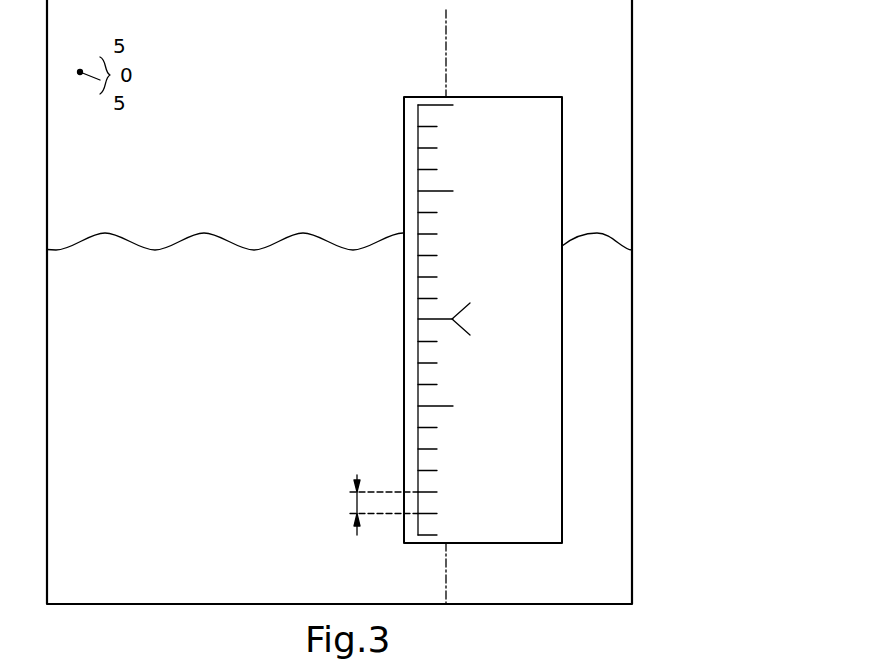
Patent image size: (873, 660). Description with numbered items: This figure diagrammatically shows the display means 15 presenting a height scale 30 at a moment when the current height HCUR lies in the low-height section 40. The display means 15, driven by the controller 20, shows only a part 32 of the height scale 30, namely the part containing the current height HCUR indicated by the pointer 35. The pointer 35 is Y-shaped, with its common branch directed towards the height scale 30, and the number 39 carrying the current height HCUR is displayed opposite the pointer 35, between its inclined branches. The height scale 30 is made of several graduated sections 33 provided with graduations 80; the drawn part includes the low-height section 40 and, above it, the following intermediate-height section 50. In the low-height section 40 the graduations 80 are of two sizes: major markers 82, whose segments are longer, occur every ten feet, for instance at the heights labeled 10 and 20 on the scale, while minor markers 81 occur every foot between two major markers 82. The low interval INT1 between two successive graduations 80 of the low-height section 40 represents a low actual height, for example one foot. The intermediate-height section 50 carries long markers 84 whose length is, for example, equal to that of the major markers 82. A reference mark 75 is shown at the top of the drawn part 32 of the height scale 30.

The display means 15 is at (632, 453).
The height scale 30 is at (586, 288).
The part of the height scale 32 is at (574, 104).
The graduated section 33 is at (619, 243).
The intermediate-height section 50 is at (542, 122).
The low-height section 40 is at (616, 345).
The pointer 35 is at (580, 317).
The number 39 is at (619, 337).
The current height HCUR is at (540, 334).
The graduations 80 is at (366, 281).
The minor markers 81 is at (423, 277).
The major markers 82 is at (366, 289).
The long markers 84 is at (366, 182).
The reference mark 75 is at (432, 105).
The controller 20 is at (432, 191).
The scale value 10 is at (418, 406).
The low interval INT1 is at (357, 500).